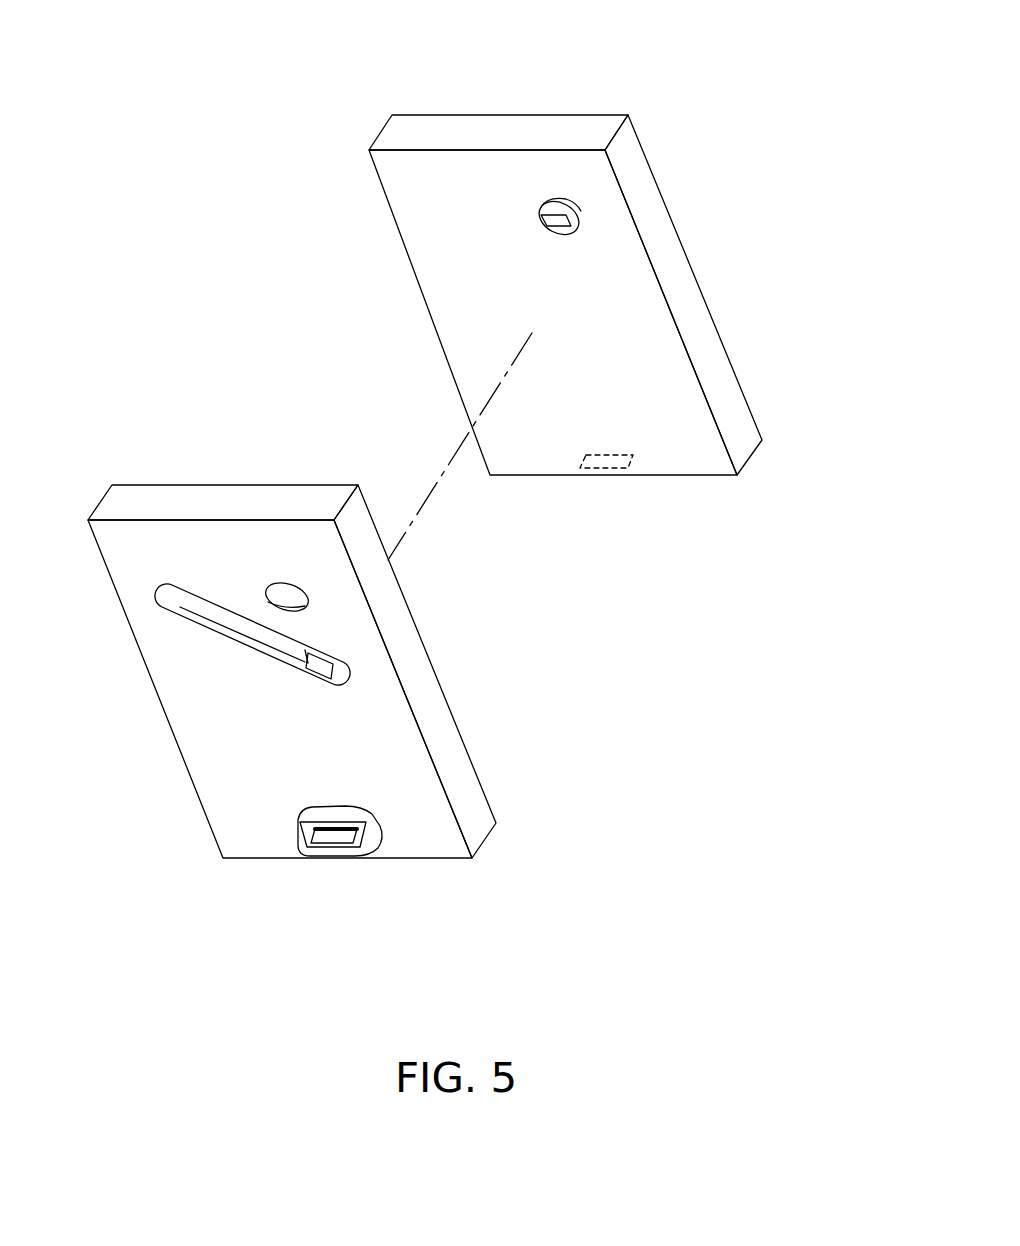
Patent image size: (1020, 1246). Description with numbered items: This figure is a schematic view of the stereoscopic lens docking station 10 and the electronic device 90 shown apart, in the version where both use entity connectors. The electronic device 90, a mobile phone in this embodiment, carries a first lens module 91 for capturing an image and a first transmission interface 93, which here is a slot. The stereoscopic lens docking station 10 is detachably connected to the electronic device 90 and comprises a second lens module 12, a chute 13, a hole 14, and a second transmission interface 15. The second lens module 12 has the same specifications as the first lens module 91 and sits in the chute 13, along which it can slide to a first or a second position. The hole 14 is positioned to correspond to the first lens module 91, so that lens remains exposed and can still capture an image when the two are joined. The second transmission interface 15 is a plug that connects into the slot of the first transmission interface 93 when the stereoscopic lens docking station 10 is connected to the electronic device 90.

The stereoscopic lens docking station 10 is at (207, 892).
The second lens module 12 is at (330, 680).
The chute 13 is at (208, 640).
The hole 14 is at (287, 598).
The second transmission interface 15 is at (345, 838).
The electronic device 90 is at (512, 115).
The first lens module 91 is at (579, 218).
The first transmission interface 93 is at (603, 458).